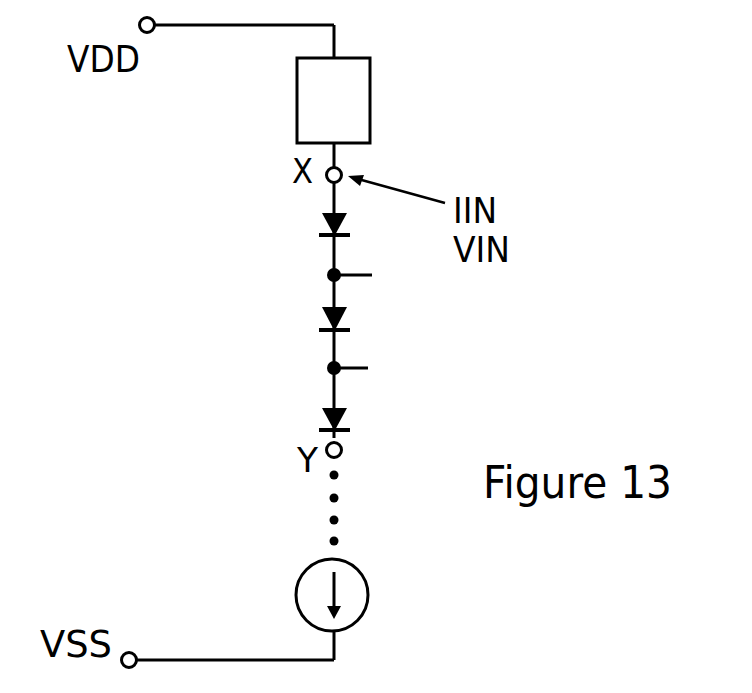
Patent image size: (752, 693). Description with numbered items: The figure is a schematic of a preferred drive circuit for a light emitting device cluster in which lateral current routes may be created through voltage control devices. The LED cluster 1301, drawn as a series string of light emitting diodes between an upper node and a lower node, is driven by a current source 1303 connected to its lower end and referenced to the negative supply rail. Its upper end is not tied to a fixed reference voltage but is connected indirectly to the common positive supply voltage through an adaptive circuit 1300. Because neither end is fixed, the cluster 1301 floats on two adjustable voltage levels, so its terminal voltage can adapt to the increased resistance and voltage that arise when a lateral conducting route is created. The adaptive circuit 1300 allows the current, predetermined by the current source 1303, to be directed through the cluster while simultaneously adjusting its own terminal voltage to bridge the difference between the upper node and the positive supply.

The adaptive circuit 1300 is at (372, 104).
The LED cluster 1301 is at (318, 335).
The current source 1303 is at (297, 572).